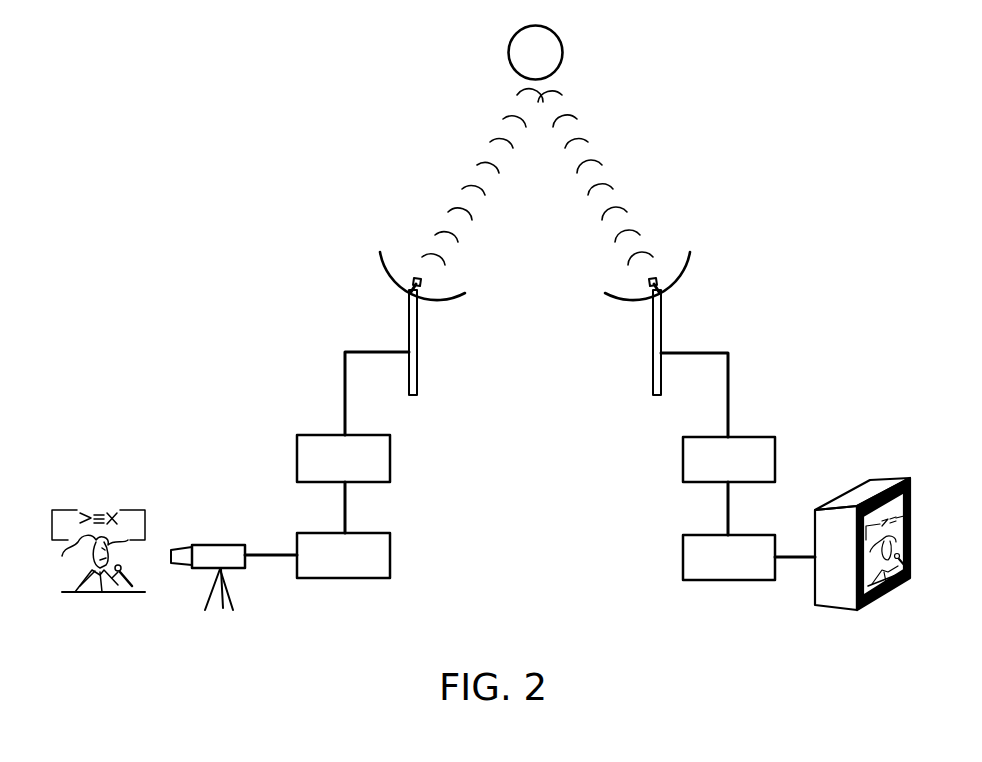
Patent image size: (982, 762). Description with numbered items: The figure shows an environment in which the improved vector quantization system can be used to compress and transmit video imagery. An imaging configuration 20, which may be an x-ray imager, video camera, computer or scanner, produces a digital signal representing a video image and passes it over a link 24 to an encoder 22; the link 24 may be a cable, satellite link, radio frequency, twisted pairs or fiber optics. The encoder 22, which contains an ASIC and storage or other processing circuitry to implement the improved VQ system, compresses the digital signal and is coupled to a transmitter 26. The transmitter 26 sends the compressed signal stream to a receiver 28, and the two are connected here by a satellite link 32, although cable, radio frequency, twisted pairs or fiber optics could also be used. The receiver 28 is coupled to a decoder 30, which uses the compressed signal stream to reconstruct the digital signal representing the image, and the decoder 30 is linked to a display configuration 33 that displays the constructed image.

The imaging configuration 20 is at (228, 545).
The encoder 22 is at (390, 548).
The link 24 is at (268, 556).
The transmitter 26 is at (303, 435).
The receiver 28 is at (757, 437).
The decoder 30 is at (683, 560).
The satellite link 32 is at (610, 305).
The display configuration 33 is at (882, 478).